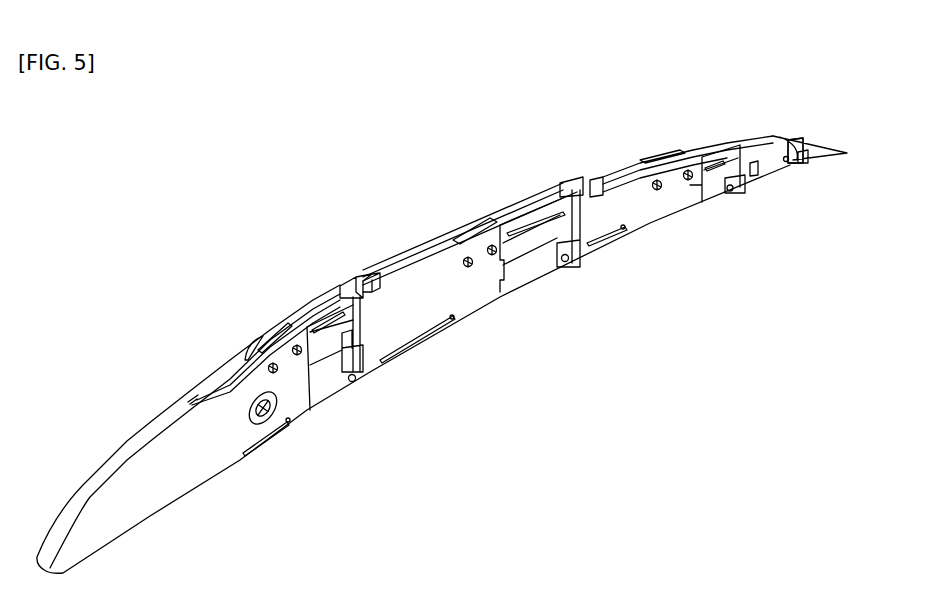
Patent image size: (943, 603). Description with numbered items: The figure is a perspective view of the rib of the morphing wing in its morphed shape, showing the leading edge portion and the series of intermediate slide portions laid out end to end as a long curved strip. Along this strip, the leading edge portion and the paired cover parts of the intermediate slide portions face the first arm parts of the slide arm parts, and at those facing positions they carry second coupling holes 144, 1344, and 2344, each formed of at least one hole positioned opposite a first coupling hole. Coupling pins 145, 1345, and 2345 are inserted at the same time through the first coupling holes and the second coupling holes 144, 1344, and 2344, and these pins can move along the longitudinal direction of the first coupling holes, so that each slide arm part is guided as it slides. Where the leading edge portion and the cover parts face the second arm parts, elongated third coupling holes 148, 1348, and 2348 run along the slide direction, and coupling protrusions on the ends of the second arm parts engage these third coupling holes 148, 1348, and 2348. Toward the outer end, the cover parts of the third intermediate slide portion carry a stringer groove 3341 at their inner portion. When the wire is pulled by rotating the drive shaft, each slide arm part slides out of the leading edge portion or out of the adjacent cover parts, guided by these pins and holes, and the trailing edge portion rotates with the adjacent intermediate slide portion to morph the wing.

The second coupling hole 144 is at (276, 374).
The coupling pin 145 is at (300, 356).
The third coupling hole 148 is at (260, 452).
The second coupling hole 1344 is at (470, 266).
The coupling pin 1345 is at (495, 254).
The third coupling hole 1348 is at (420, 342).
The second coupling hole 2344 is at (660, 190).
The coupling pin 2345 is at (693, 180).
The third coupling hole 2348 is at (620, 240).
The stringer groove 3341 is at (803, 156).